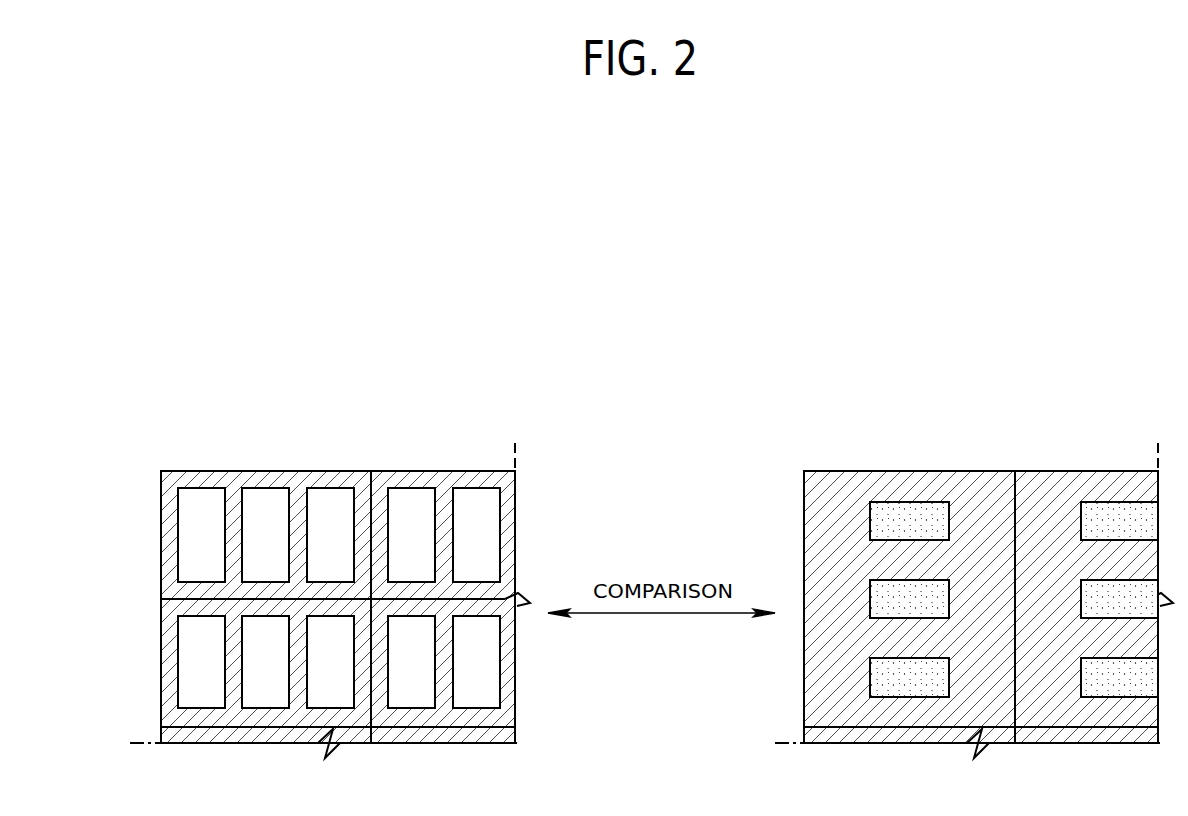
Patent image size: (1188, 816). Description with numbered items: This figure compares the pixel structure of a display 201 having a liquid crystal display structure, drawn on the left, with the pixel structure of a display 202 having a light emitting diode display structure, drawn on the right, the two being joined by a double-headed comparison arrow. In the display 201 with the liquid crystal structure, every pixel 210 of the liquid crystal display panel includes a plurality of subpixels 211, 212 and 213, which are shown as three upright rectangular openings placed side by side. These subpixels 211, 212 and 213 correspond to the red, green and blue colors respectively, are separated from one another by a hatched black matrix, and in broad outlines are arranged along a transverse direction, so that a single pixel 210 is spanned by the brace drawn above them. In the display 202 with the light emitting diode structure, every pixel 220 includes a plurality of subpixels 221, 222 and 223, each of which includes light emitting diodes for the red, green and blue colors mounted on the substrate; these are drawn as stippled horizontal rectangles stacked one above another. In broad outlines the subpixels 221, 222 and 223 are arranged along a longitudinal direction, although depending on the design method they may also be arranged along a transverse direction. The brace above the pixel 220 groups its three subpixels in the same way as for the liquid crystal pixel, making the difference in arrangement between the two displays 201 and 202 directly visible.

The display having a liquid crystal display structure 201 is at (482, 354).
The display having a LED display structure 202 is at (1122, 354).
The pixel 210 is at (330, 385).
The subpixel 211 is at (200, 500).
The subpixel 212 is at (263, 500).
The subpixel 213 is at (328, 500).
The pixel 220 is at (840, 385).
The subpixel 221 is at (944, 503).
The subpixel 222 is at (908, 588).
The subpixel 223 is at (880, 662).